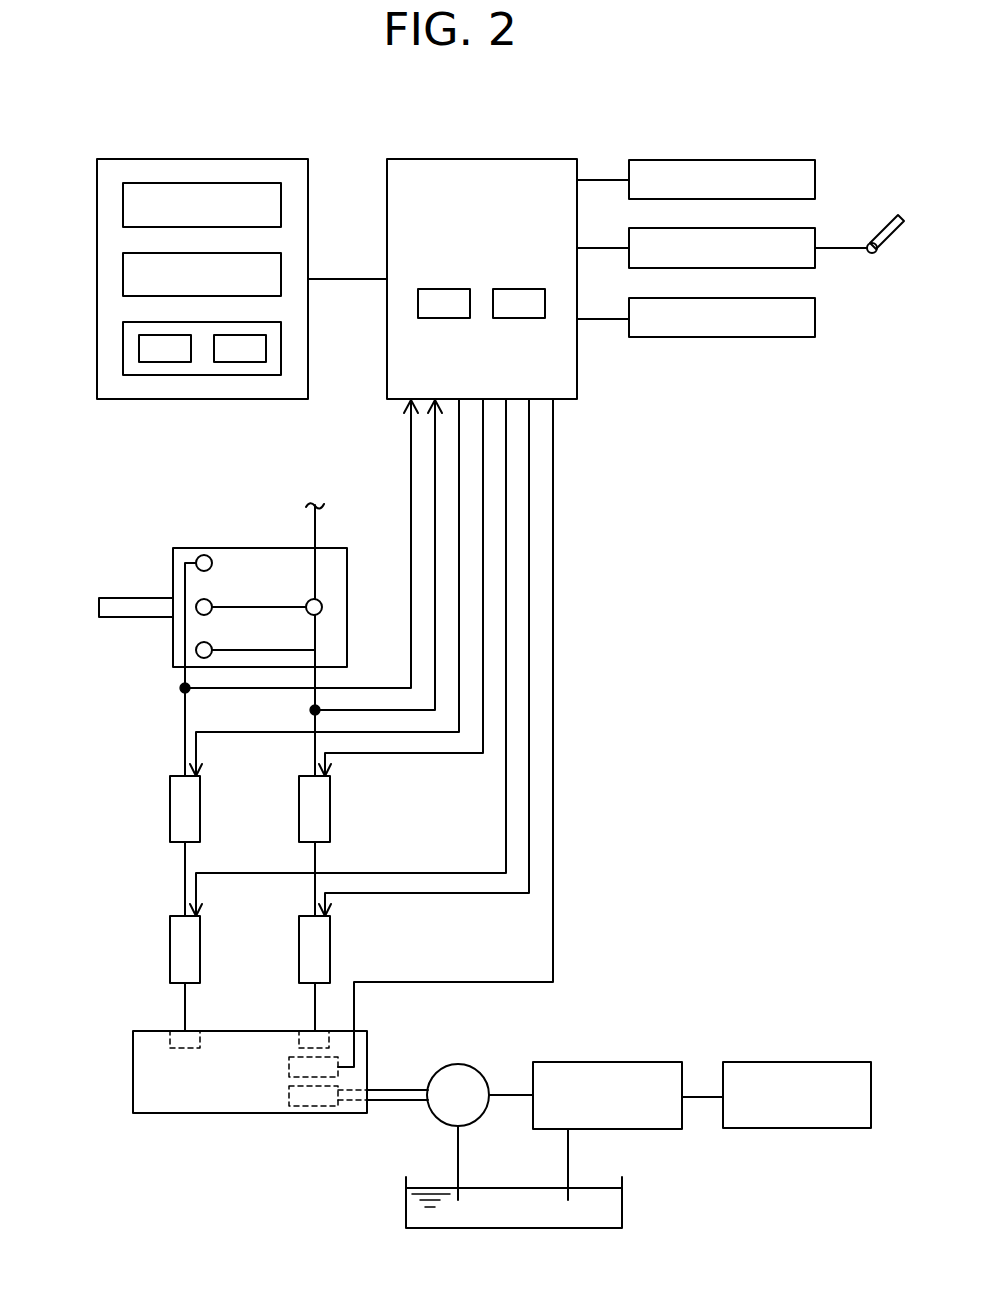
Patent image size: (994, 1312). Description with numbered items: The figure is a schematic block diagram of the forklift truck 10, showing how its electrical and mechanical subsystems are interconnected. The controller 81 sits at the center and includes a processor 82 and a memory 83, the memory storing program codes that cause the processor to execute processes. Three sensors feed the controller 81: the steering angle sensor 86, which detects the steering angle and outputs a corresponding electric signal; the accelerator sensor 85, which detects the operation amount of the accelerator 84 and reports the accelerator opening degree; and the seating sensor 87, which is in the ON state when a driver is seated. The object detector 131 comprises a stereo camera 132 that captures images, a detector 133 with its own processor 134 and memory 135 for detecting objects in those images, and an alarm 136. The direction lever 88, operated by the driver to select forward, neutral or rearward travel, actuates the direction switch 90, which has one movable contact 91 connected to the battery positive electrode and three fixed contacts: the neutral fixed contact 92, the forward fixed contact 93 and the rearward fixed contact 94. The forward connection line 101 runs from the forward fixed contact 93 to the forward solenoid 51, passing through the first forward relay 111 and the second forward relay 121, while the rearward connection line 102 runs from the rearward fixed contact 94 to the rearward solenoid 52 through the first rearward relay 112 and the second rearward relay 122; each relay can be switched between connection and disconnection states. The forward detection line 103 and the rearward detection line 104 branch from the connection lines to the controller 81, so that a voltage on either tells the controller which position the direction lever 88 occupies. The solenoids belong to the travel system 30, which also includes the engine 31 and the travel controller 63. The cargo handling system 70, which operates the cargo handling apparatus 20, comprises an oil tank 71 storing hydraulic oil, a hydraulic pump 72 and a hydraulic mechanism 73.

The forklift truck 10 is at (69, 991).
The cargo handling apparatus 20 is at (797, 1062).
The travel system 30 is at (133, 1072).
The engine 31 is at (289, 1094).
The forward solenoid 51 is at (170, 1040).
The rearward solenoid 52 is at (299, 1040).
The travel controller 63 is at (289, 1067).
The cargo handling system 70 is at (672, 1189).
The oil tank 71 is at (406, 1205).
The hydraulic pump 72 is at (459, 1064).
The hydraulic mechanism 73 is at (606, 1062).
The controller 81 is at (383, 178).
The processor 82 is at (443, 289).
The memory 83 is at (518, 289).
The accelerator 84 is at (873, 255).
The accelerator sensor 85 is at (785, 228).
The steering angle sensor 86 is at (785, 160).
The seating sensor 87 is at (785, 298).
The direction lever 88 is at (98, 604).
The direction switch 90 is at (347, 606).
The movable contact 91 is at (282, 604).
The neutral fixed contact 92 is at (211, 601).
The forward fixed contact 93 is at (208, 555).
The rearward fixed contact 94 is at (211, 644).
The forward connection line 101 is at (183, 721).
The rearward connection line 102 is at (316, 858).
The forward detection line 103 is at (410, 444).
The rearward detection line 104 is at (434, 470).
The first forward relay 111 is at (170, 806).
The first rearward relay 112 is at (330, 808).
The second forward relay 121 is at (170, 950).
The second rearward relay 122 is at (330, 950).
The object detector 131 is at (272, 159).
The stereo camera 132 is at (281, 261).
The detector 133 is at (281, 331).
The processor 134 is at (139, 347).
The memory 135 is at (266, 345).
The alarm 136 is at (281, 200).